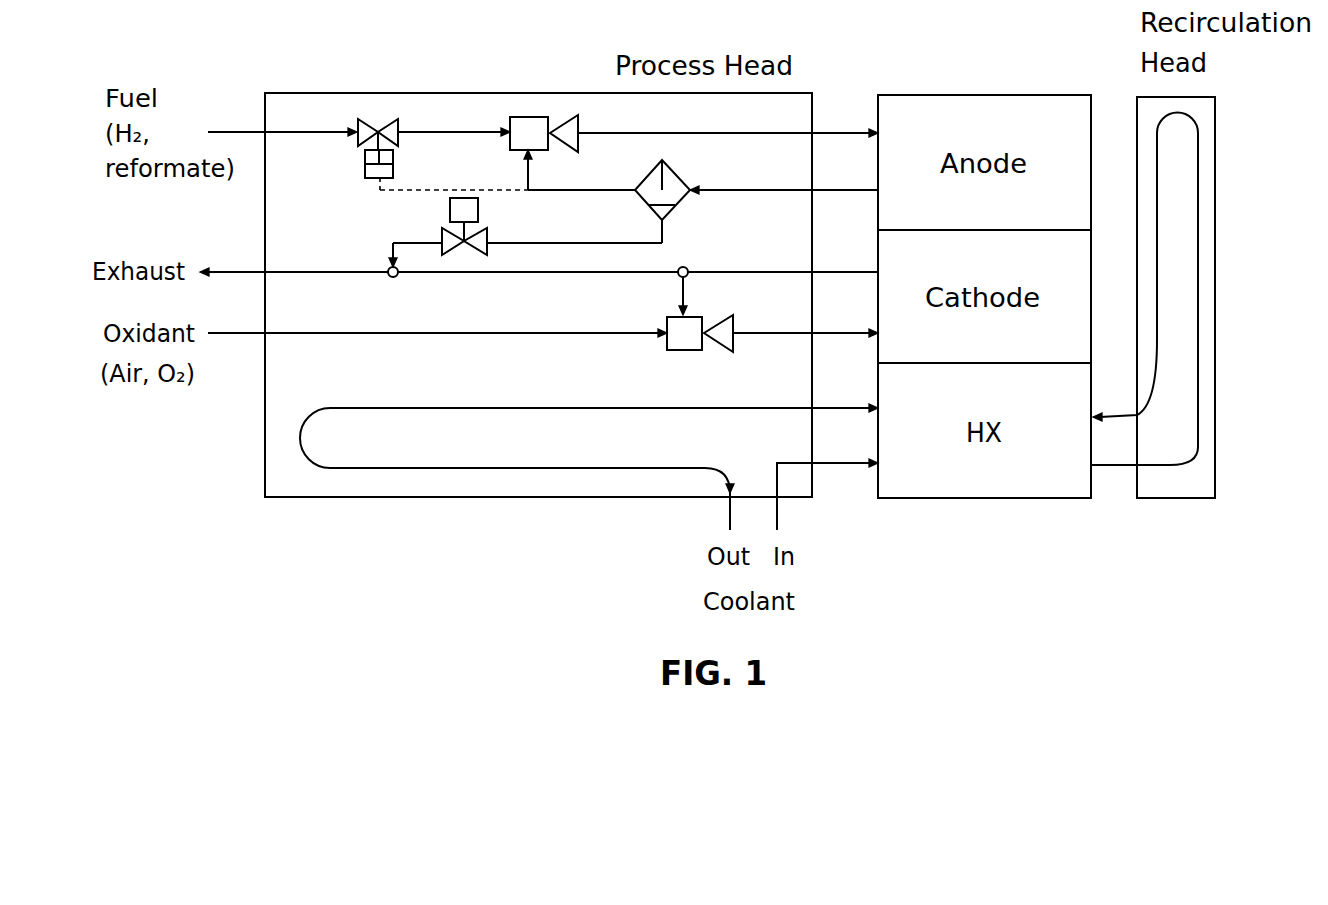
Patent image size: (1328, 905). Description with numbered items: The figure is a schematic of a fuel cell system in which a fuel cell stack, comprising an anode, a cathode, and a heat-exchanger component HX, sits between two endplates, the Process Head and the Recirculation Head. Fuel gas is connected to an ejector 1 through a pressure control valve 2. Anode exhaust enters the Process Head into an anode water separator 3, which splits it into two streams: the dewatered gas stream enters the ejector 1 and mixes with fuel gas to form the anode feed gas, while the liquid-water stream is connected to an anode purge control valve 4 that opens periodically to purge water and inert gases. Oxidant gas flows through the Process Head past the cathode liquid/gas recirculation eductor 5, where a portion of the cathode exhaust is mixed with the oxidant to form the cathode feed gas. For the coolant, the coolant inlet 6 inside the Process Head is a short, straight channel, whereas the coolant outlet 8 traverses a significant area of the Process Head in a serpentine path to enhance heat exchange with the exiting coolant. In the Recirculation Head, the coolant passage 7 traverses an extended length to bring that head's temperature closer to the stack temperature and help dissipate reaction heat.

The ejector 1 is at (542, 130).
The pressure control valve 2 is at (388, 130).
The anode water separator 3 is at (682, 190).
The anode purge control valve 4 is at (459, 232).
The cathode liquid/gas recirculation eductor 5 is at (697, 336).
The coolant inlet 6 is at (827, 494).
The coolant passage 7 is at (1145, 288).
The coolant outlet 8 is at (589, 467).